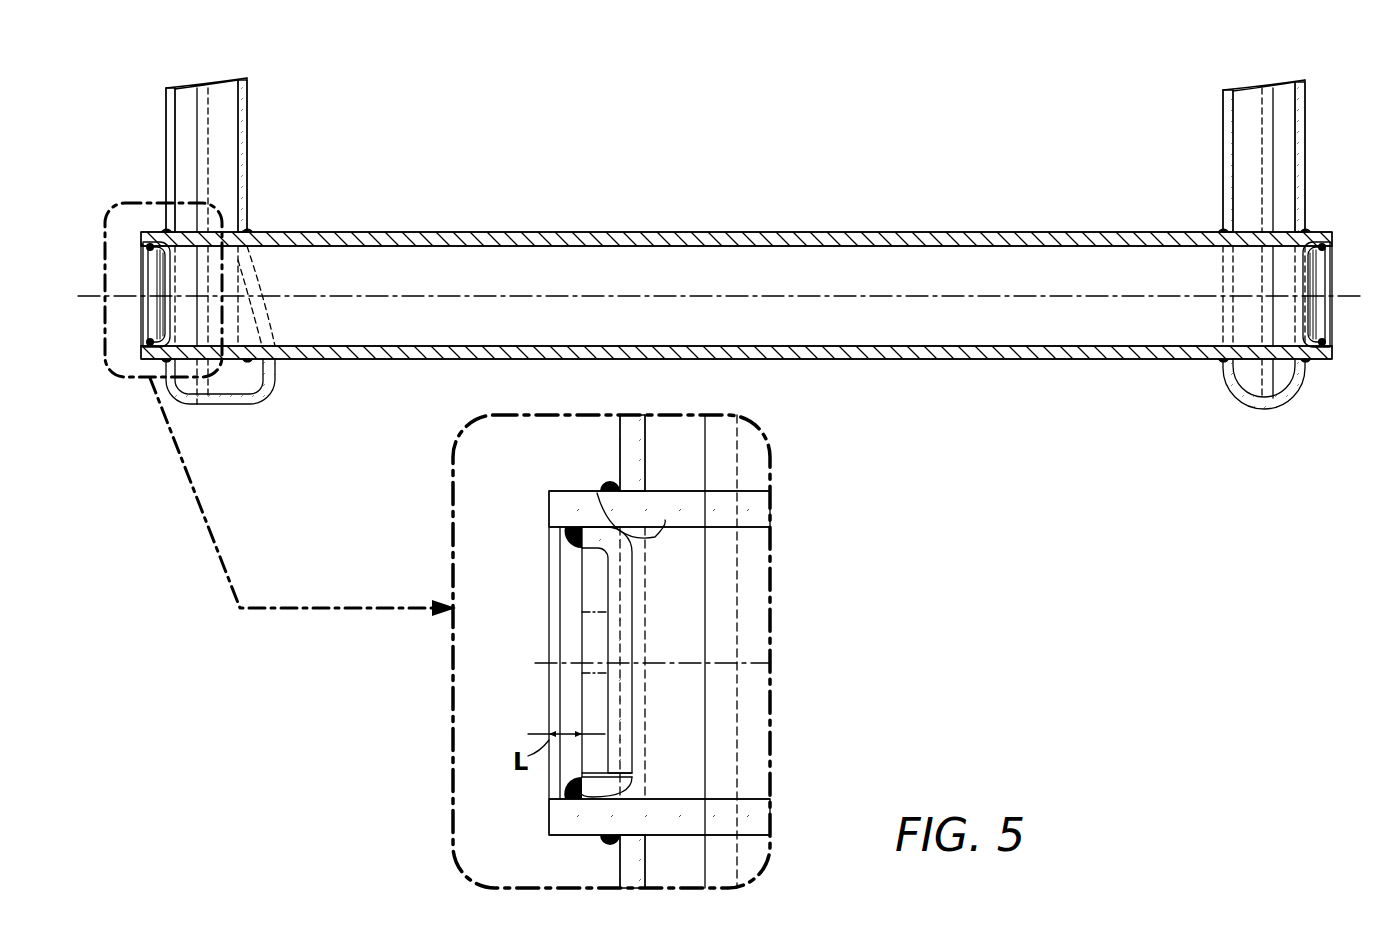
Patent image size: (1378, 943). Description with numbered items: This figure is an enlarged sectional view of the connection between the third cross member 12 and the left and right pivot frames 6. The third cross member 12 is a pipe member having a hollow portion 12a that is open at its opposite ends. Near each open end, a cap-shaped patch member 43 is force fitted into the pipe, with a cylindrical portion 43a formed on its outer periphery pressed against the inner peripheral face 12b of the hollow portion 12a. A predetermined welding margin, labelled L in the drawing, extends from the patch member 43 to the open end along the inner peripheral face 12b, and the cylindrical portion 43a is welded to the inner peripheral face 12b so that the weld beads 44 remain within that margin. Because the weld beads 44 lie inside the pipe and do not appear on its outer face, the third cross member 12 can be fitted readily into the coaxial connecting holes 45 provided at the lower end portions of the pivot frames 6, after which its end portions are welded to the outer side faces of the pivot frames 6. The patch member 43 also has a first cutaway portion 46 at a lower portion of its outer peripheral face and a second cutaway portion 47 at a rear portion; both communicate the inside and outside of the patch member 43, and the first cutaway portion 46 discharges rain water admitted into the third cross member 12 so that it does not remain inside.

The pivot frame 6 is at (248, 122).
The third cross member 12 is at (850, 228).
The hollow portion 12a is at (541, 262).
The inner peripheral face 12b is at (190, 248).
The patch member 43 is at (150, 318).
The cylindrical portion 43a is at (592, 553).
The weld bead 44 is at (572, 537).
The connecting hole 45 is at (164, 233).
The first cutaway portion 46 is at (632, 774).
The second cutaway portion 47 is at (632, 637).